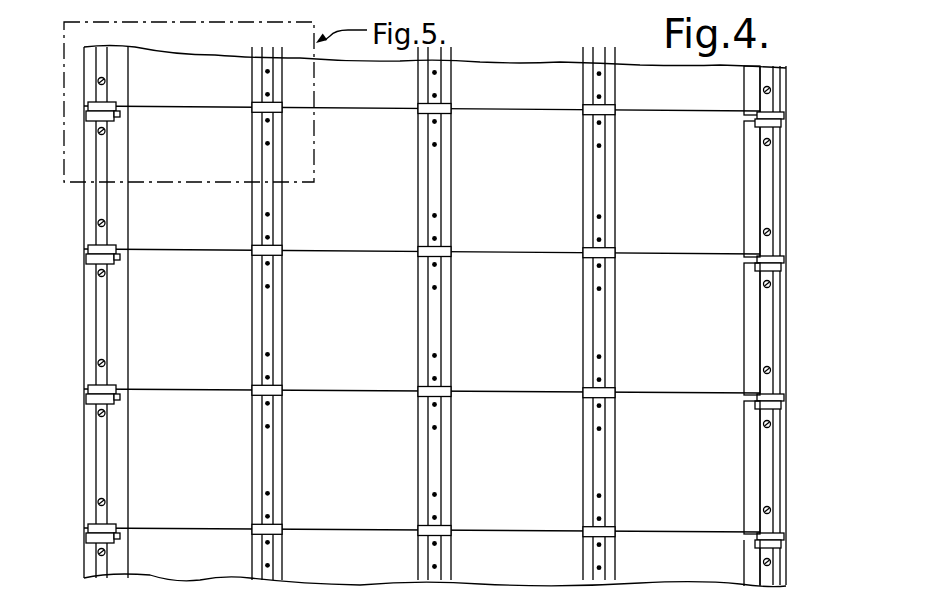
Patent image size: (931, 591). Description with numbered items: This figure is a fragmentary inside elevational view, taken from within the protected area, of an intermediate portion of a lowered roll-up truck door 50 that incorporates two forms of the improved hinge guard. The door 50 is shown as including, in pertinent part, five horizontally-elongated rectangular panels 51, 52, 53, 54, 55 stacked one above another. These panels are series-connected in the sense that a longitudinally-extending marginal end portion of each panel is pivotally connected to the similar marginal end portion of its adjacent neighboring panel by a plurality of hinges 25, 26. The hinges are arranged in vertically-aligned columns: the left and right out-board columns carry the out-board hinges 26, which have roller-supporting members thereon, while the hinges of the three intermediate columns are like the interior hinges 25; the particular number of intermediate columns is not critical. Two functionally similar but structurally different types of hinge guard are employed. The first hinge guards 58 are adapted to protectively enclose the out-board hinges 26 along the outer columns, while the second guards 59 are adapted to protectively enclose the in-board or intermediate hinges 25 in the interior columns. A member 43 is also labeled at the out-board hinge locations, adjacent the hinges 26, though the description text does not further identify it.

The interior hinge 25 is at (298, 105).
The out-board hinge 26 is at (76, 108).
The connector lower block / latch member 43 is at (134, 118).
The roll-up truck door 50 is at (545, 50).
The rectangular panel 51 is at (719, 83).
The rectangular panel 52 is at (722, 181).
The rectangular panel 53 is at (712, 330).
The rectangular panel 54 is at (716, 465).
The rectangular panel 55 is at (722, 570).
The first hinge guard 58 is at (143, 208).
The second hinge guard 59 is at (298, 285).